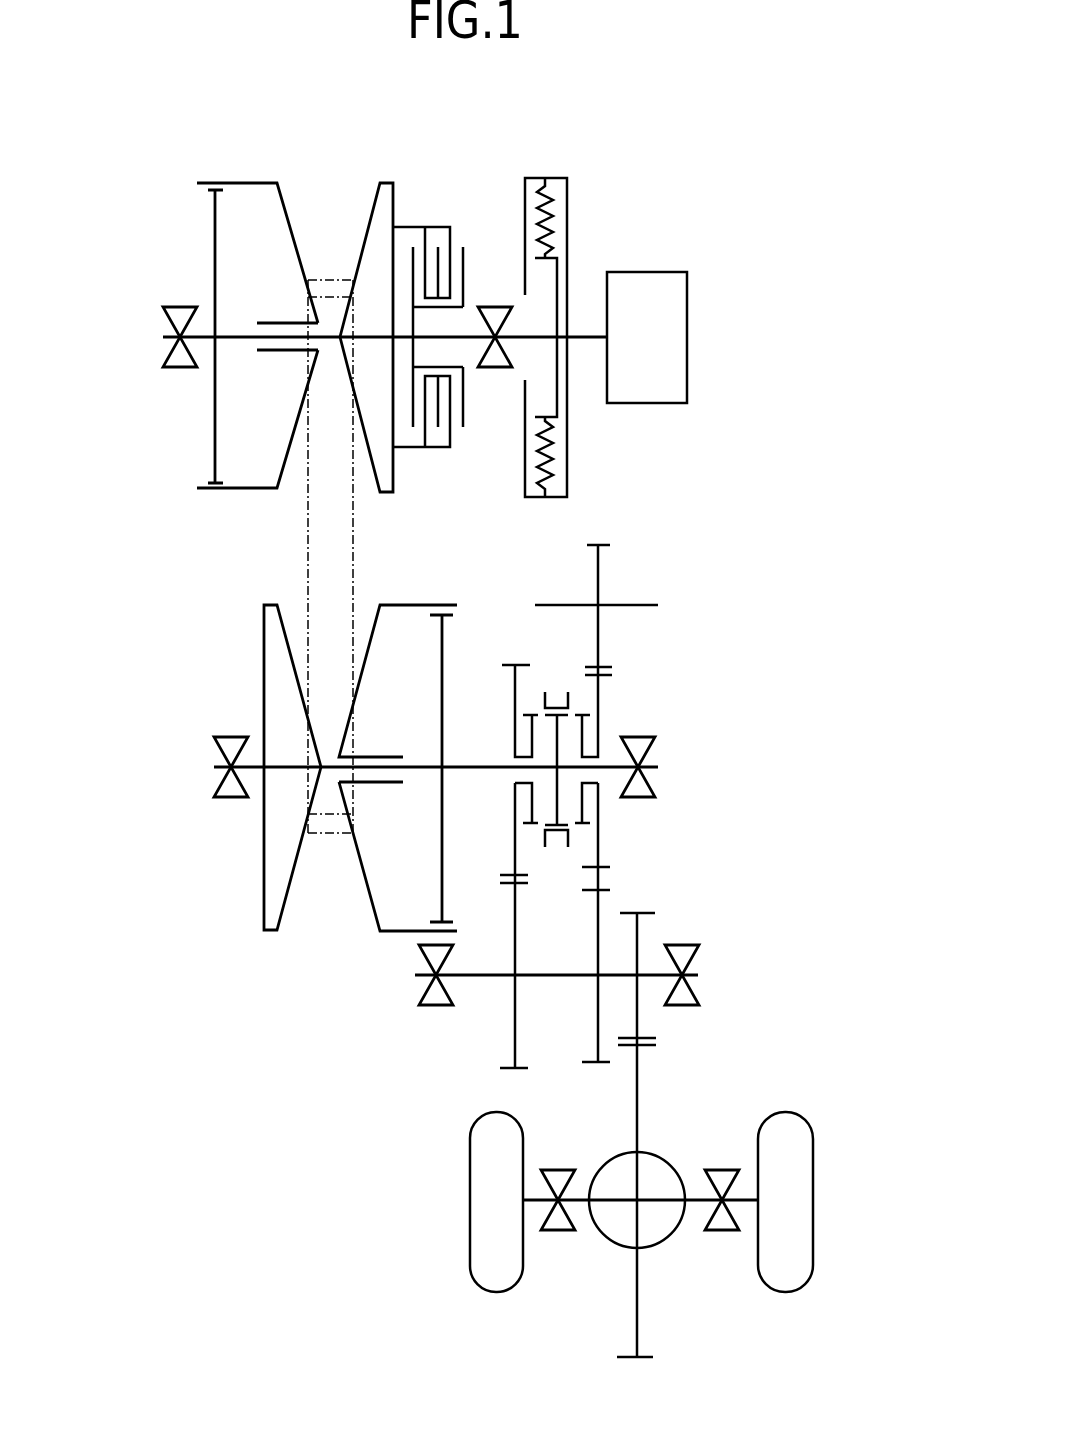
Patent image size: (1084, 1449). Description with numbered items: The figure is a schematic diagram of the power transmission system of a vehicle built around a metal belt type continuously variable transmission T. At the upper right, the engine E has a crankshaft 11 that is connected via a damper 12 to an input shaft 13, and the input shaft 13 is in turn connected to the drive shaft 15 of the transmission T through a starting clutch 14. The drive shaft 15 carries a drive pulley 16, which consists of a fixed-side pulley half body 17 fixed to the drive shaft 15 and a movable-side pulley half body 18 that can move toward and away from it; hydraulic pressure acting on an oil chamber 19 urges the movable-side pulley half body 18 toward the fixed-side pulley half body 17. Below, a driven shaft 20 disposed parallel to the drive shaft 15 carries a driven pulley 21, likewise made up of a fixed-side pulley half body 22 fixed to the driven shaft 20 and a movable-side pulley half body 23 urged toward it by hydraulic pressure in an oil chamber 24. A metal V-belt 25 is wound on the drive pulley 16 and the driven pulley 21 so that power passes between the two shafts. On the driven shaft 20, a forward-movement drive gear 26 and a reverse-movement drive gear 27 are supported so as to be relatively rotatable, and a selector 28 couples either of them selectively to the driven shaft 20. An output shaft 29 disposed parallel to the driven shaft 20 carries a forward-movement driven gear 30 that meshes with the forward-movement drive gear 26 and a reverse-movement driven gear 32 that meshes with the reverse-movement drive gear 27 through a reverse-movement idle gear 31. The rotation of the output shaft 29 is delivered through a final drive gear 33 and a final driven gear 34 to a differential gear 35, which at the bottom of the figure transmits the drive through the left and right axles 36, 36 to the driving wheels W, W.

The crankshaft 11 is at (583, 340).
The damper 12 is at (583, 218).
The input shaft 13 is at (518, 335).
The starting clutch 14 is at (442, 219).
The drive shaft 15 is at (233, 333).
The drive pulley 16 is at (295, 307).
The fixed-side pulley half body 17 is at (378, 218).
The movable-side pulley half body 18 is at (285, 218).
The oil chamber 19 is at (275, 408).
The driven shaft 20 is at (490, 767).
The driven pulley 21 is at (331, 805).
The fixed-side pulley half body 22 is at (264, 643).
The movable-side pulley half body 23 is at (376, 628).
The oil chamber 24 is at (432, 853).
The metal V-belt 25 is at (353, 557).
The forward-movement drive gear 26 is at (507, 663).
The reverse-movement drive gear 27 is at (612, 675).
The selector 28 is at (557, 847).
The output shaft 29 is at (538, 975).
The forward-movement driven gear 30 is at (523, 1068).
The reverse-movement idle gear 31 is at (607, 545).
The reverse-movement driven gear 32 is at (590, 1062).
The final drive gear 33 is at (648, 913).
The final driven gear 34 is at (648, 1045).
The differential gear 35 is at (668, 1163).
The axle 36 is at (573, 1203).
The continuously variable transmission T is at (248, 546).
The engine E is at (662, 351).
The driving wheel W is at (470, 1255).